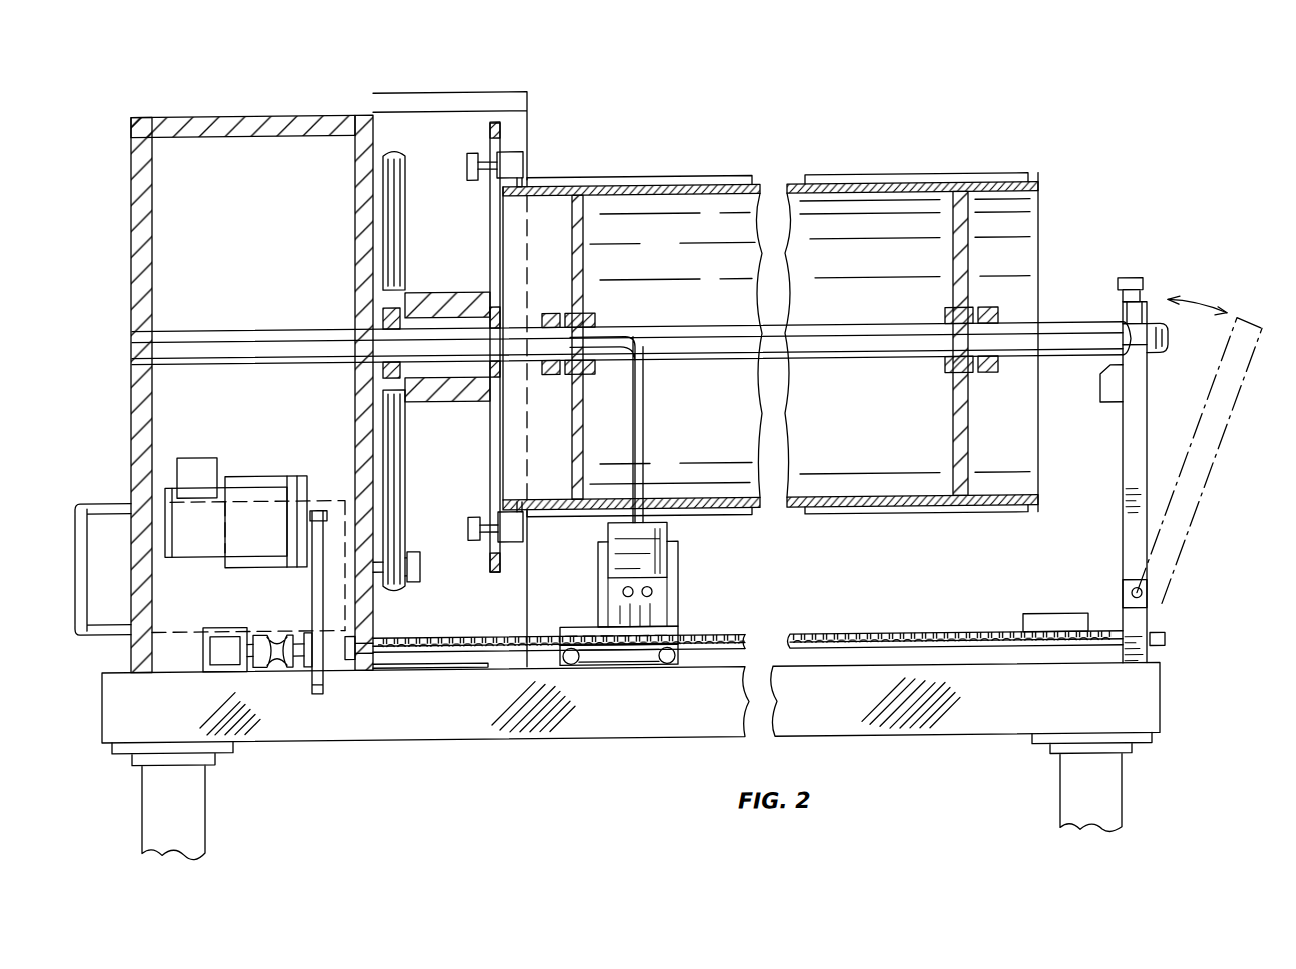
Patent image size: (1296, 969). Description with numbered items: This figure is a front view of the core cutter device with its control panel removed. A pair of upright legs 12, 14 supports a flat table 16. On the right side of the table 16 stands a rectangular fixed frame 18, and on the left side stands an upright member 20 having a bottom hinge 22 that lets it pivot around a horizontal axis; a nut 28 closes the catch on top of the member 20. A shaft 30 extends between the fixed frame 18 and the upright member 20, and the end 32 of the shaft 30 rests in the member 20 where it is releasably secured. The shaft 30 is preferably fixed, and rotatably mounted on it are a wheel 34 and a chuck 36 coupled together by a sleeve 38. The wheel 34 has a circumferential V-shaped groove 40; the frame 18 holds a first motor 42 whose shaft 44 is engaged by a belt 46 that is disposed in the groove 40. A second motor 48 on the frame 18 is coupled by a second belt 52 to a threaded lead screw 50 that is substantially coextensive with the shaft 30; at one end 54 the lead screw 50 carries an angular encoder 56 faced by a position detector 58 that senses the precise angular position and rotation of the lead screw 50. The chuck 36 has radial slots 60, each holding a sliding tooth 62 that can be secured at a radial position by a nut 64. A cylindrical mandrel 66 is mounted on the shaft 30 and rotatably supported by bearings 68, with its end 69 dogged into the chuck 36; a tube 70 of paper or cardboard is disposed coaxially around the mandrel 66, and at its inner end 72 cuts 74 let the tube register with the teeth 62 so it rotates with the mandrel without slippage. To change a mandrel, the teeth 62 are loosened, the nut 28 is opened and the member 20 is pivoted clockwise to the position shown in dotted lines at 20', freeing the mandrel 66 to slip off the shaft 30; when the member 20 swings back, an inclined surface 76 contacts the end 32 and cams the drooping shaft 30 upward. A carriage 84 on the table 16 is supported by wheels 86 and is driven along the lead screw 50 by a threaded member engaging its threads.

The upright leg 12 is at (190, 822).
The upright leg 14 is at (1105, 801).
The table 16 is at (455, 742).
The fixed frame 18 is at (200, 118).
The upright member 20 is at (1175, 479).
The pivoted position of upright member 20' is at (1201, 460).
The bottom hinge 22 is at (1145, 606).
The nut 28 is at (1130, 289).
The shaft 30 is at (1072, 354).
The end of shaft 32 is at (1149, 330).
The wheel 34 is at (413, 175).
The chuck 36 is at (495, 127).
The sleeve 38 is at (450, 406).
The V-shaped groove 40 is at (393, 154).
The first motor 42 is at (110, 506).
The motor shaft 44 is at (421, 569).
The belt 46 is at (408, 525).
The second motor 48 is at (225, 492).
The threaded lead screw 50 is at (385, 658).
The second belt 52 is at (317, 700).
The end of lead screw 54 is at (300, 645).
The angular encoder 56 is at (270, 670).
The position detector 58 is at (216, 657).
The radial slot 60 is at (495, 222).
The tooth 62 is at (514, 160).
The nut 64 is at (471, 176).
The cylindrical mandrel 66 is at (1030, 192).
The bearings 68 is at (598, 324).
The end of mandrel 69 is at (531, 238).
The tube 70 is at (897, 183).
The inner end of tube 72 is at (562, 192).
The cuts 74 is at (536, 197).
The inclined camming surface 76 is at (1104, 397).
The carriage 84 is at (672, 627).
The wheels 86 is at (572, 680).